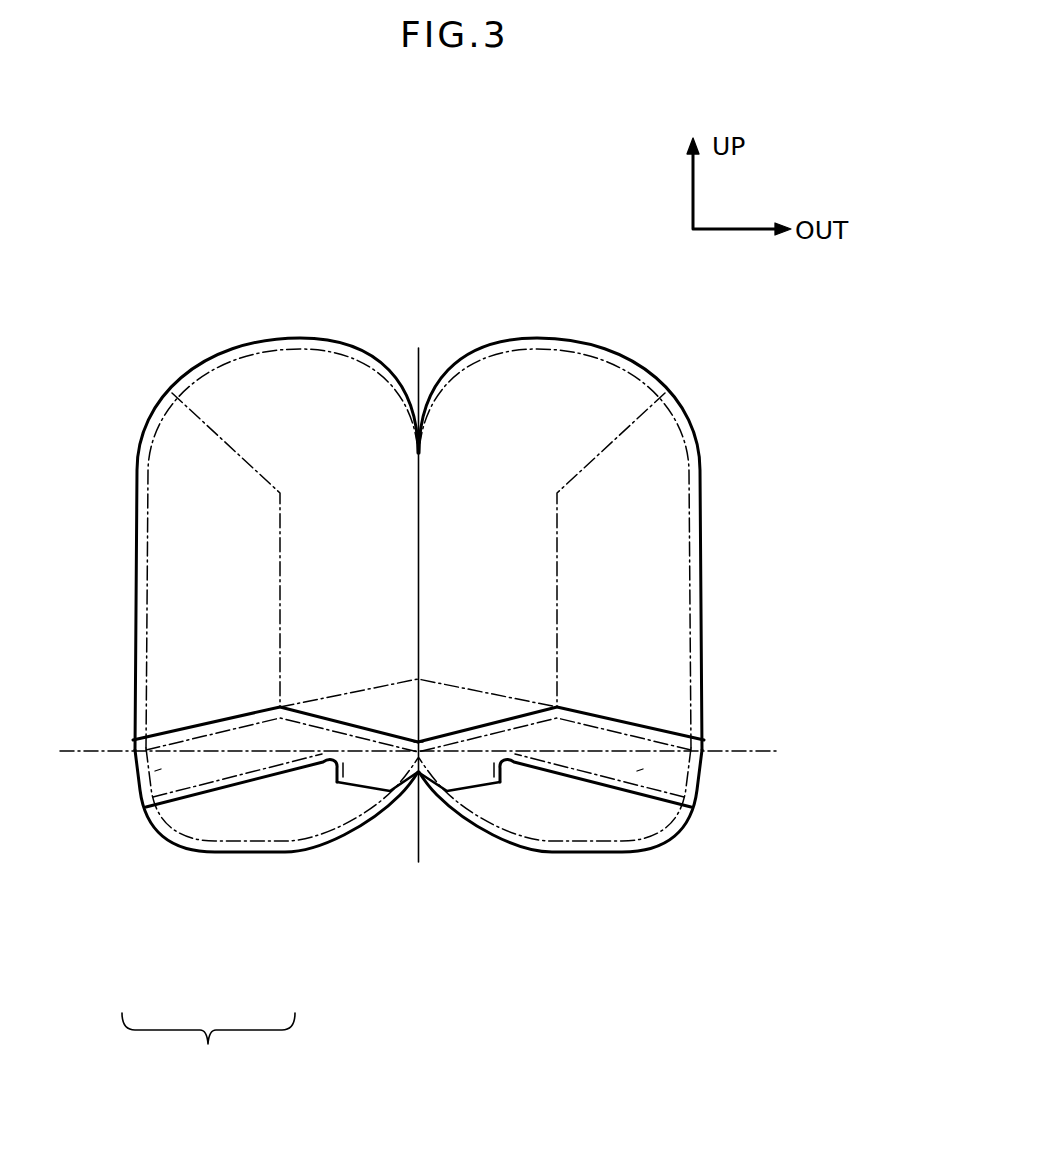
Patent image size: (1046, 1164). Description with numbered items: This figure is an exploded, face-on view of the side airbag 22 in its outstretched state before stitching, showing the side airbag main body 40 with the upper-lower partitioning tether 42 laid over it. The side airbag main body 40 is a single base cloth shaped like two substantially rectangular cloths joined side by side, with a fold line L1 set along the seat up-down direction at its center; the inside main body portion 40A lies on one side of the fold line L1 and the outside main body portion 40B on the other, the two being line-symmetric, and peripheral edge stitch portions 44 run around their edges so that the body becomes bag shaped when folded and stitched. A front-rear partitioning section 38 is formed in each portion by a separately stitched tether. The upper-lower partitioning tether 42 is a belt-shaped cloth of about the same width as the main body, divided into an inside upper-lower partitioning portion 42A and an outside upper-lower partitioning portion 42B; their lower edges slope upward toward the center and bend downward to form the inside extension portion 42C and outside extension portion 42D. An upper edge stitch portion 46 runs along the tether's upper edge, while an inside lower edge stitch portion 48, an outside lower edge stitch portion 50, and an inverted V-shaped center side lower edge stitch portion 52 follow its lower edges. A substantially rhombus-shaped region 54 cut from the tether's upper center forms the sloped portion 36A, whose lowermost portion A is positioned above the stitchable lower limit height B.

The side airbag 22 is at (208, 1048).
The side airbag main body 40 is at (230, 851).
The upper-lower partitioning tether 42 is at (255, 783).
The inside main body portion 40A is at (270, 388).
The outside main body portion 40B is at (577, 397).
The front-rear partitioning section 38 is at (222, 440).
The peripheral edge stitch portions 44 is at (690, 467).
The upper edge stitch portion 46 is at (210, 722).
The inside lower edge stitch portion 48 is at (288, 768).
The outside lower edge stitch portion 50 is at (580, 774).
The center side lower edge stitch portion 52 is at (393, 792).
The region 54 is at (333, 698).
The sloped portion 36A is at (525, 713).
The inside upper-lower partitioning portion 42A is at (158, 770).
The outside upper-lower partitioning portion 42B is at (640, 770).
The inside extension portion 42C is at (355, 787).
The outside extension portion 42D is at (462, 790).
The lowermost portion A is at (418, 740).
The lower limit height B is at (765, 750).
The fold line L1 is at (419, 358).